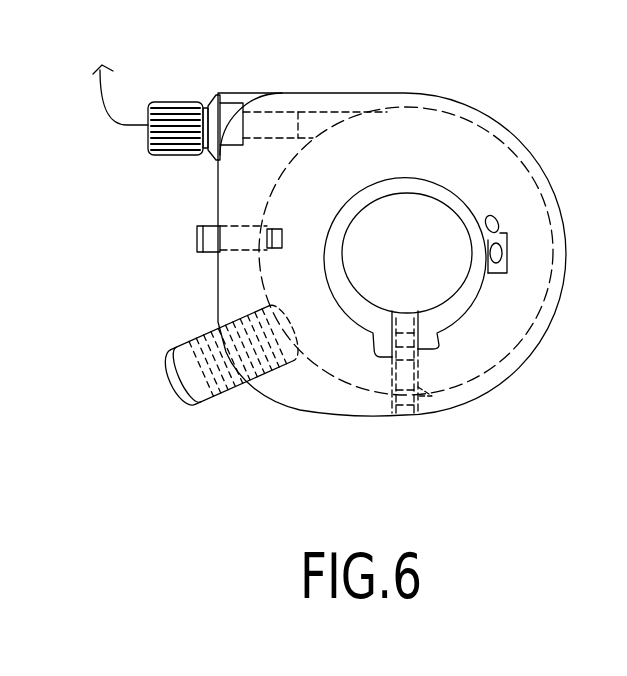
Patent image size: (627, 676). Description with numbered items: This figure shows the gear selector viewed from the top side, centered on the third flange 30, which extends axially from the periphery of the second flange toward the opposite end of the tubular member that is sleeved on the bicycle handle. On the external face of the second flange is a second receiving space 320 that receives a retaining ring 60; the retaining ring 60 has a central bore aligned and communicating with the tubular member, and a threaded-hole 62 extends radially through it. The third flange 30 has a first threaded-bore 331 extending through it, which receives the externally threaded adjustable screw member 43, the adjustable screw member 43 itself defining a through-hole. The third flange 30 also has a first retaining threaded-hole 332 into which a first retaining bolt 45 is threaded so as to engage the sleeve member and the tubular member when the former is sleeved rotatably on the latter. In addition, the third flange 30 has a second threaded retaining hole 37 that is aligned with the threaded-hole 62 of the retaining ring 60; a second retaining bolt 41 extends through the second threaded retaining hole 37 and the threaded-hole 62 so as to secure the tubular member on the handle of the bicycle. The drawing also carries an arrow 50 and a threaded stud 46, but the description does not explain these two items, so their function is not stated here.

The third flange 30 is at (388, 92).
The first threaded-bore 331 is at (270, 118).
The adjustable screw member 43 is at (173, 101).
The rotation direction arrow 50 is at (95, 82).
The retaining ring 60 is at (452, 197).
The second receiving space 320 is at (483, 297).
The first retaining threaded-hole 332 is at (238, 222).
The first retaining bolt 45 is at (197, 243).
The threaded stud 46 is at (295, 342).
The second retaining bolt 41 is at (408, 418).
The second threaded retaining hole 37 is at (438, 417).
The threaded-hole 62 is at (490, 390).